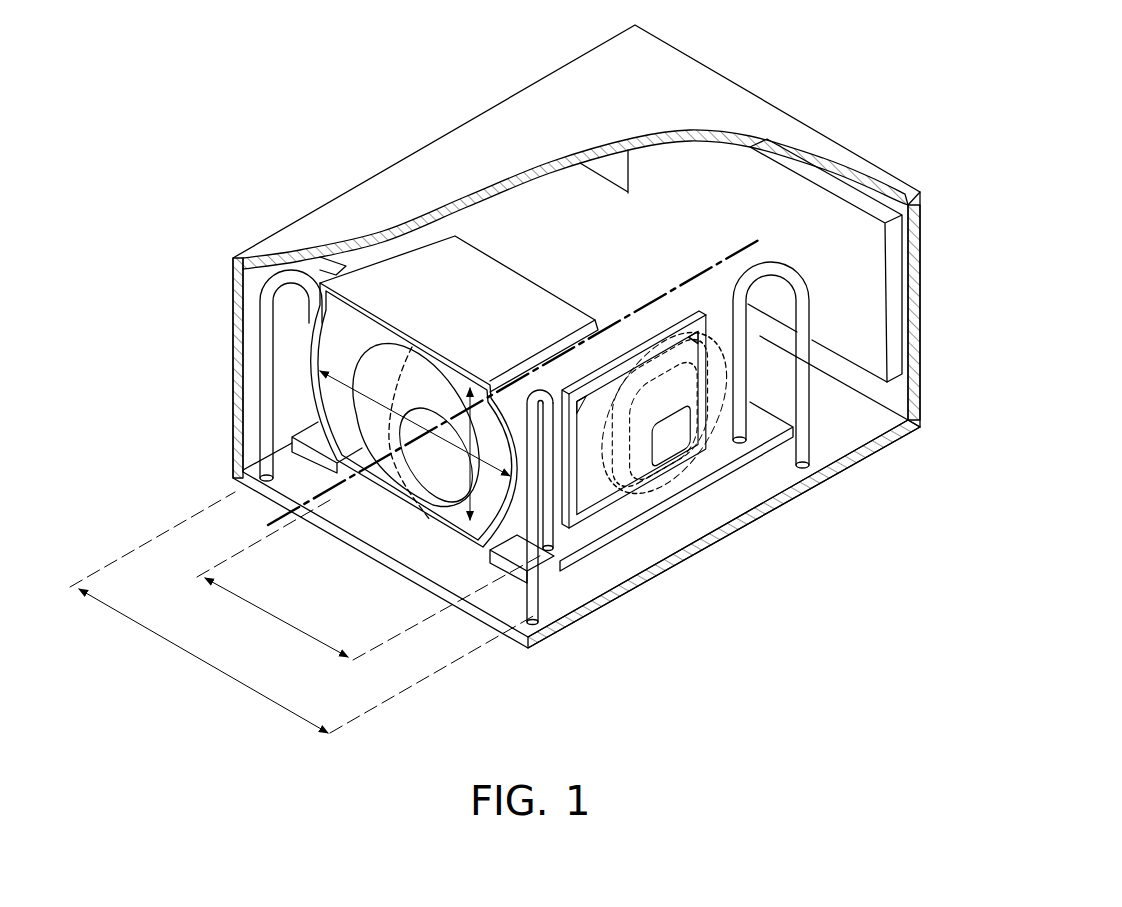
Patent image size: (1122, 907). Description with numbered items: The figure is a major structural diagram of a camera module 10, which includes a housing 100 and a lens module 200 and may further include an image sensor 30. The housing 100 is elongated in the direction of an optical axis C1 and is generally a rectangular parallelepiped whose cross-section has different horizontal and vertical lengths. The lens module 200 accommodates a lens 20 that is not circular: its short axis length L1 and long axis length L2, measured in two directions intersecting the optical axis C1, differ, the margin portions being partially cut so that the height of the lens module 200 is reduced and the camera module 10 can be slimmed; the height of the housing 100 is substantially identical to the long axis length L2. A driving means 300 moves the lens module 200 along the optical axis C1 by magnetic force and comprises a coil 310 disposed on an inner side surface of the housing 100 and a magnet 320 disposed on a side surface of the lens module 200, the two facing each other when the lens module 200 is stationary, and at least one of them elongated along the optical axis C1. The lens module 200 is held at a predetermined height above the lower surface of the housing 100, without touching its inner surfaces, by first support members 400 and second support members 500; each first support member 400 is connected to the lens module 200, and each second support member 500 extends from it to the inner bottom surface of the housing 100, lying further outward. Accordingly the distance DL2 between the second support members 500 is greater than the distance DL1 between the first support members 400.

The camera module 10 is at (775, 84).
The housing 100 is at (576, 336).
The image sensor 30 is at (875, 285).
The lens module 200 is at (427, 290).
The lens 20 is at (378, 490).
The short axis length L1 is at (428, 500).
The long axis length L2 is at (410, 437).
The optical axis C1 is at (742, 238).
The driving means 300 is at (676, 486).
The coil 310 is at (686, 487).
The magnet 320 is at (592, 482).
The first support member 400 is at (557, 537).
The second support member 500 is at (537, 595).
The distance between the first support members DL1 is at (371, 580).
The distance between the second support members DL2 is at (302, 612).